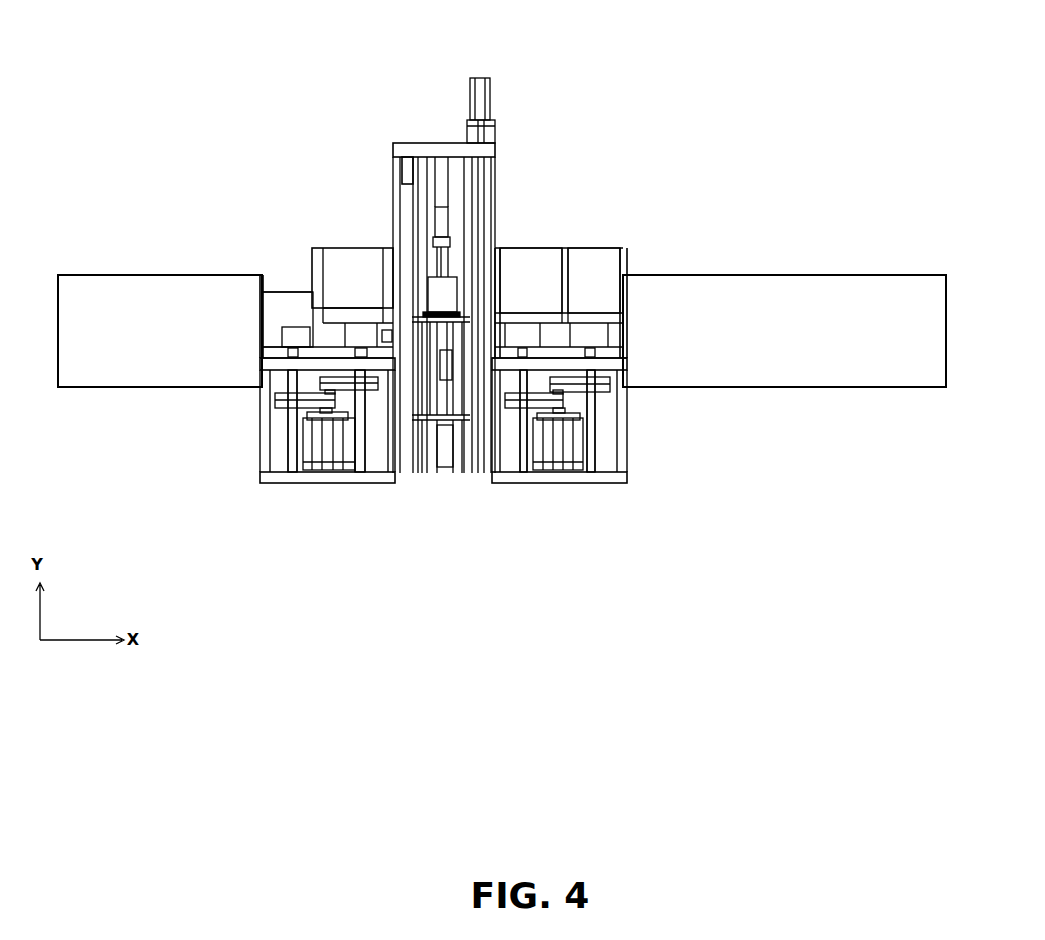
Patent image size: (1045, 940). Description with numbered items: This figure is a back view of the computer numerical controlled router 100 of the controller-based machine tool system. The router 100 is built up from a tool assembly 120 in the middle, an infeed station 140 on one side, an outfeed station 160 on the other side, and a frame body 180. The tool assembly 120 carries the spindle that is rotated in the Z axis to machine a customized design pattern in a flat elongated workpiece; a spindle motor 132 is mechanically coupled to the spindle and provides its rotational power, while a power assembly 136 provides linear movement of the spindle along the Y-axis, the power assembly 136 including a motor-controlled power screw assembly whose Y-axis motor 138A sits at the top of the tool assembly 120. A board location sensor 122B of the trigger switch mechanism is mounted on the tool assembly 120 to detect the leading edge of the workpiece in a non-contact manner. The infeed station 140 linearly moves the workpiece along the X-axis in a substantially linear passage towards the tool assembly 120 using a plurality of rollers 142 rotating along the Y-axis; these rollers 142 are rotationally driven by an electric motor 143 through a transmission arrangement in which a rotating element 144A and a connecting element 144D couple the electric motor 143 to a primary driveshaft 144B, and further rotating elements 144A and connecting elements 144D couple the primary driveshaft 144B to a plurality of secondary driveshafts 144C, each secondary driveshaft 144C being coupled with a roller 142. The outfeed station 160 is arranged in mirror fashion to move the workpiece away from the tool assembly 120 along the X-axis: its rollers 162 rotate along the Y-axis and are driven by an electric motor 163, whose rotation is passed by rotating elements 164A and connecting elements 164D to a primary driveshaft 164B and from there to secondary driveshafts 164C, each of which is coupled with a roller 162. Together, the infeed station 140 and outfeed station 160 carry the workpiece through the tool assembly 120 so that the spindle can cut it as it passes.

The computer numerical controlled (CNC) router 100 is at (713, 100).
The tool assembly 120 is at (514, 180).
The board location sensor 122B is at (408, 172).
The spindle motor 132 is at (447, 295).
The power assembly 136 is at (496, 115).
The Y-axis motor 138A is at (483, 97).
The infeed station 140 is at (297, 340).
The rollers 142 is at (273, 308).
The electric motor 143 is at (345, 452).
The rotating elements 144A is at (298, 393).
The primary driveshaft 144B is at (330, 472).
The secondary driveshafts 144C is at (295, 455).
The connecting elements 144D is at (277, 400).
The outfeed station 160 is at (625, 397).
The rollers 162 is at (527, 332).
The electric motor 163 is at (568, 452).
The rotating elements 164A is at (530, 394).
The primary driveshaft 164B is at (558, 465).
The secondary driveshafts 164C is at (528, 462).
The connecting elements 164D is at (523, 400).
The frame body 180 is at (290, 300).